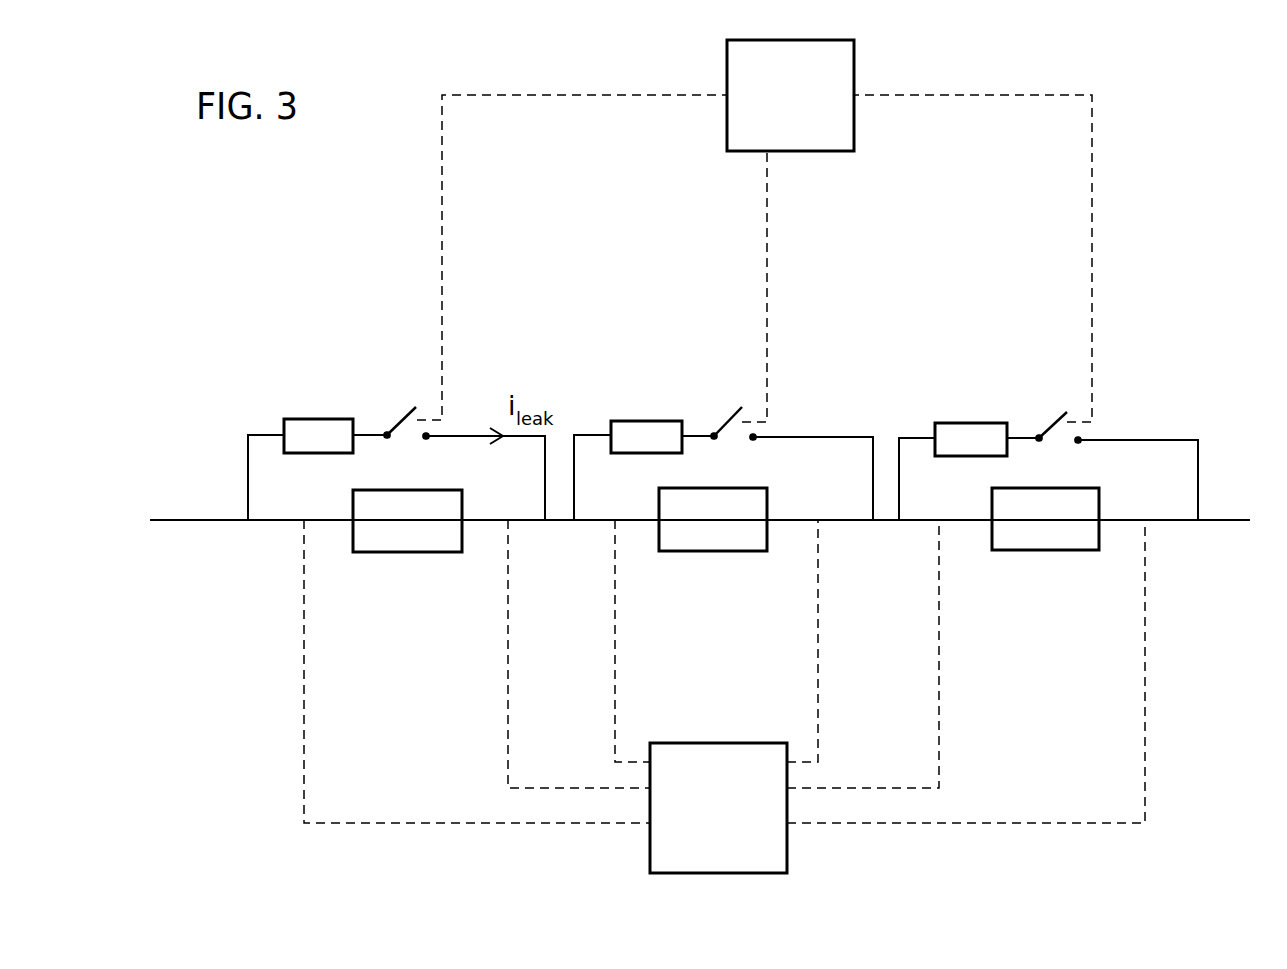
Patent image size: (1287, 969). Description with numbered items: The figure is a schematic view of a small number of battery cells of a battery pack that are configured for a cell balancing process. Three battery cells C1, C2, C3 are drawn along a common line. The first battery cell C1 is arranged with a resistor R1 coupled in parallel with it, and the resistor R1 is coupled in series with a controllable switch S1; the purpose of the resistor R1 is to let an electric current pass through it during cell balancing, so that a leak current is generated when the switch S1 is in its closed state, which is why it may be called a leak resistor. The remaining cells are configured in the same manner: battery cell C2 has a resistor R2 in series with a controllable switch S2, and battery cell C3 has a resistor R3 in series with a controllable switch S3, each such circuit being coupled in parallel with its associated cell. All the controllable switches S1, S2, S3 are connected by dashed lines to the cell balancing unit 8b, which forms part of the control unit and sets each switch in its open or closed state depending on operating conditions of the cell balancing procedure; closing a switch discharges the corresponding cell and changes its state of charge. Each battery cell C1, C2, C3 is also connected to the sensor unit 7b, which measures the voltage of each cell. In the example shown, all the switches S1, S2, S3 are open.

The resistor R1 is at (303, 423).
The controllable switch S1 is at (417, 408).
The first battery cell C1 is at (373, 540).
The resistor R2 is at (618, 433).
The controllable switch S2 is at (733, 415).
The battery cell C2 is at (677, 528).
The resistor R3 is at (948, 435).
The controllable switch S3 is at (1067, 412).
The battery cell C3 is at (1013, 534).
The cell balancing unit 8b is at (733, 70).
The sensor unit 7b is at (770, 843).